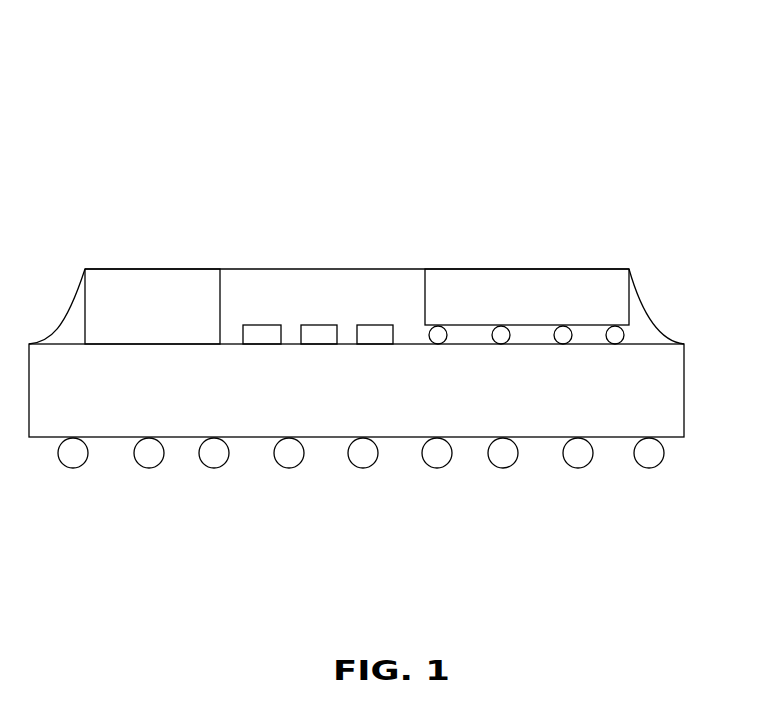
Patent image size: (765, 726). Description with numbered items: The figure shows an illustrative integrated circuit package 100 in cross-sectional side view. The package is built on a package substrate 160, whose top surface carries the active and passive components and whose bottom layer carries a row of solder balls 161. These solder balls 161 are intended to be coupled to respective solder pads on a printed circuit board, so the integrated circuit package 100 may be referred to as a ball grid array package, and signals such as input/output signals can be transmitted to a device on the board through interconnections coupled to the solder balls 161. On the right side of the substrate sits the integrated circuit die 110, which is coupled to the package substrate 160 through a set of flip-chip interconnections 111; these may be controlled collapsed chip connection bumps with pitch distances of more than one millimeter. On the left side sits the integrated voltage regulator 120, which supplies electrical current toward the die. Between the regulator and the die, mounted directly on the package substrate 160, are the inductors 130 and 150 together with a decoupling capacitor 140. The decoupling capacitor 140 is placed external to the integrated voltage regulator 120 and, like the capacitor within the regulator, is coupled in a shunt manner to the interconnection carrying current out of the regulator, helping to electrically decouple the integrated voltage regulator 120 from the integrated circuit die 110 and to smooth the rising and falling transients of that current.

The integrated circuit package 100 is at (629, 105).
The integrated circuit die 110 is at (544, 311).
The flip-chip interconnections 111 is at (615, 337).
The integrated voltage regulator 120 is at (173, 320).
The inductor 130 is at (262, 333).
The decoupling capacitor 140 is at (378, 333).
The inductor 150 is at (323, 333).
The package substrate 160 is at (369, 413).
The solder balls 161 is at (585, 464).